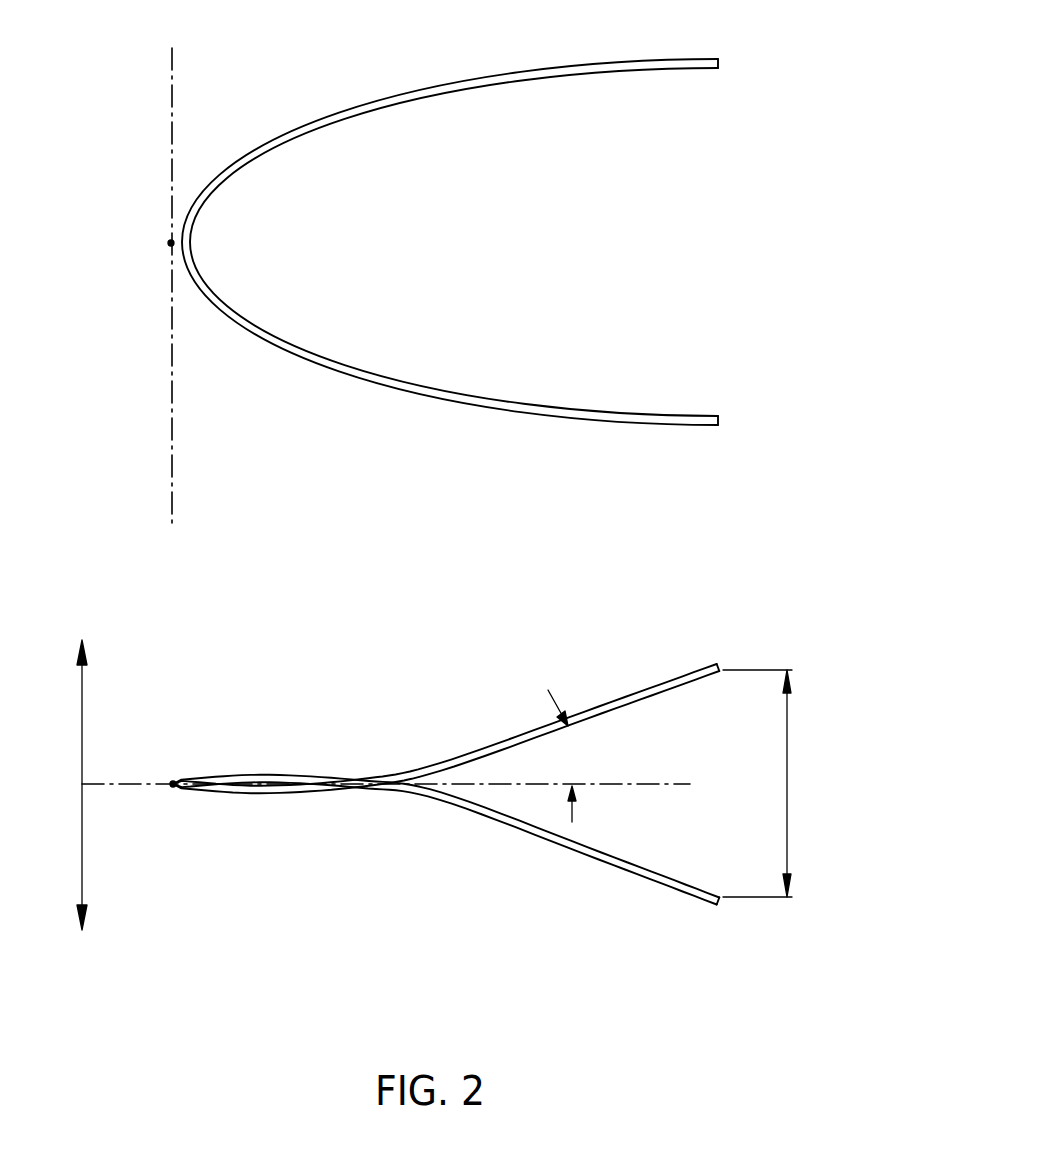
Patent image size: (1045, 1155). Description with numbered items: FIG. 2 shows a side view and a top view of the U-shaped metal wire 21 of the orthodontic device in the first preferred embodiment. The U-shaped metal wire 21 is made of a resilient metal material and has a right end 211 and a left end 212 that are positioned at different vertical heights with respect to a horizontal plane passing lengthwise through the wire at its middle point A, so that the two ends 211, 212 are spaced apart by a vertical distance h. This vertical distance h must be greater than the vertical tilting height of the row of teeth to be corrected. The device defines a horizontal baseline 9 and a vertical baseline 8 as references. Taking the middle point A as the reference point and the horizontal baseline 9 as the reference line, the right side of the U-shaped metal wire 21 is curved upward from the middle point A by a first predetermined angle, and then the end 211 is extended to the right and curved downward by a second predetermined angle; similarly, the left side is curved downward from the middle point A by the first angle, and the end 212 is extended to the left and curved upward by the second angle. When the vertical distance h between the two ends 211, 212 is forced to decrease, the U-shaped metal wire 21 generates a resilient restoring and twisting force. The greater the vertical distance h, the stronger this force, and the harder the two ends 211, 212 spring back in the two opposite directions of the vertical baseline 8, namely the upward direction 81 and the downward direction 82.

The U-shaped metal wire 21 is at (265, 345).
The right end 211 is at (708, 418).
The left end 212 is at (688, 60).
The horizontal baseline 9 is at (172, 475).
The middle point A is at (170, 243).
The vertical baseline 8 is at (82, 747).
The upward direction 81 is at (87, 652).
The downward direction 82 is at (87, 912).
The vertical distance h is at (771, 783).